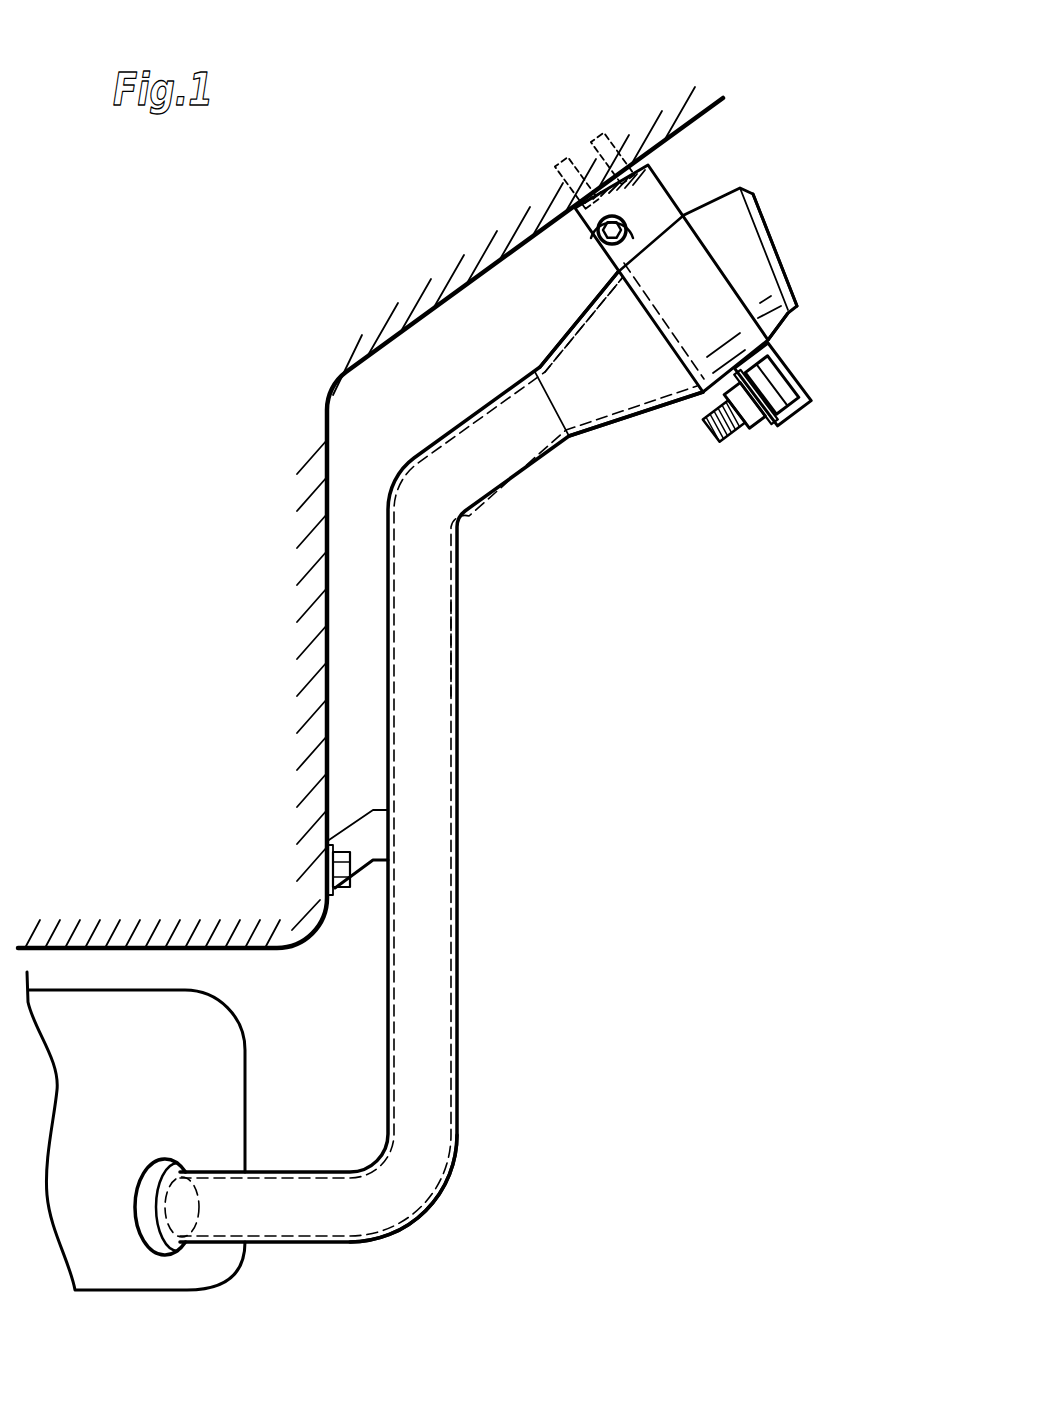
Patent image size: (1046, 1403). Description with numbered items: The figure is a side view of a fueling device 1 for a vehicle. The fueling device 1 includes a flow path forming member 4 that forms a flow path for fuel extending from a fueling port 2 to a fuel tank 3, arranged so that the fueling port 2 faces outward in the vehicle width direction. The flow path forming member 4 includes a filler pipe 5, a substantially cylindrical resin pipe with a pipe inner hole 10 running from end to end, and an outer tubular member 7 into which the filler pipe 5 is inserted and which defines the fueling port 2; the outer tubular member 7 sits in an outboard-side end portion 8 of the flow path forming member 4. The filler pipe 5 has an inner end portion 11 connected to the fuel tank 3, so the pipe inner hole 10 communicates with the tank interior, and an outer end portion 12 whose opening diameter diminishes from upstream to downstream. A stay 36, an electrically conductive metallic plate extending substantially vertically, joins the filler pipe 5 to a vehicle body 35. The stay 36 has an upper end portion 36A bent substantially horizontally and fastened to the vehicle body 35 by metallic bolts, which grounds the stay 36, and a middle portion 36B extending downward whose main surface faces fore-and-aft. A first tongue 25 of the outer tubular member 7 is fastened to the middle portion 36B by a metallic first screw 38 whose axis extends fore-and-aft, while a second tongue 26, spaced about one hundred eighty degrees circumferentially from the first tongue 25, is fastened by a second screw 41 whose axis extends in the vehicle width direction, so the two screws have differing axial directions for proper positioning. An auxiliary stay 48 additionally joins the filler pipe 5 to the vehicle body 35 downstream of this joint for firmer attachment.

The fueling device 1 is at (588, 474).
The fueling port 2 is at (781, 229).
The fuel tank 3 is at (93, 1283).
The flow path forming member 4 is at (464, 745).
The filler pipe 5 is at (456, 651).
The outer tubular member 7 is at (772, 281).
The outboard-side end portion 8 is at (792, 344).
The pipe inner hole 10 is at (552, 366).
The inner end portion 11 is at (393, 1246).
The outer end portion 12 is at (600, 292).
The first tongue 25 is at (637, 236).
The second tongue 26 is at (778, 431).
The vehicle body 35 is at (719, 104).
The stay 36 is at (672, 203).
The upper end portion 36A is at (600, 185).
The middle portion 36B is at (778, 341).
The first screw 38 is at (598, 236).
The second screw 41 is at (782, 388).
The auxiliary stay 48 is at (361, 830).